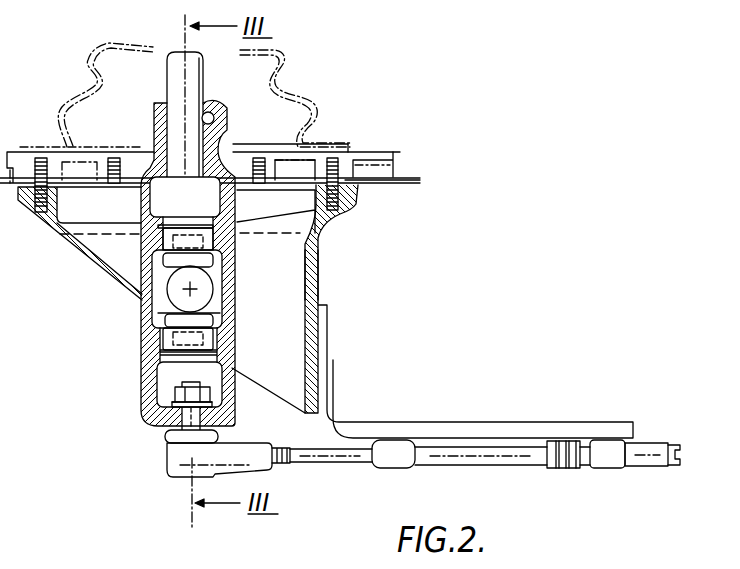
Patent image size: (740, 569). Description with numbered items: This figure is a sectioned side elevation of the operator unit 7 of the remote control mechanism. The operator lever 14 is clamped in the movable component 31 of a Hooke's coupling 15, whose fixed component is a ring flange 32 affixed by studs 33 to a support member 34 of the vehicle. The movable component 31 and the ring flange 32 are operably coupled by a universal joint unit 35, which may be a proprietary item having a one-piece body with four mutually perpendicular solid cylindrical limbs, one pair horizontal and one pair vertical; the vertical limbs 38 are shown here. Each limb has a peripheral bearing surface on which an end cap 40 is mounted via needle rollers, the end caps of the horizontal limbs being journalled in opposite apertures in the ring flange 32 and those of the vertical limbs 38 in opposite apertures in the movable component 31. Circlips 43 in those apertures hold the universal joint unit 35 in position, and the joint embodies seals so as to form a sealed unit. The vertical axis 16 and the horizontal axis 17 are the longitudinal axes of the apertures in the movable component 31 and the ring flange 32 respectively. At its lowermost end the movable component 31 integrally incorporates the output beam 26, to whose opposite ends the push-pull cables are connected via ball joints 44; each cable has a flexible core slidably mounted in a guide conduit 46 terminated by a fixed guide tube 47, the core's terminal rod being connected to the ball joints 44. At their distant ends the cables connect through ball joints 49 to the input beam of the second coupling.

The operator unit 7 is at (331, 238).
The operator lever 14 is at (205, 78).
The Hooke's coupling 15 is at (141, 312).
The vertical axis 16 is at (198, 81).
The horizontal axis 17 is at (186, 290).
The output beam 26 is at (214, 418).
The movable component 31 is at (230, 270).
The ring flange 32 is at (318, 259).
The studs 33 is at (340, 162).
The support member 34 is at (388, 168).
The universal joint unit 35 is at (199, 302).
The vertical limbs 38 is at (165, 246).
The end cap 40 is at (180, 307).
The circlips 43 is at (343, 218).
The ball joints 44 is at (177, 457).
The guide conduit 46 is at (677, 458).
The fixed guide tube 47 is at (638, 457).
The ball joints 49 is at (352, 455).